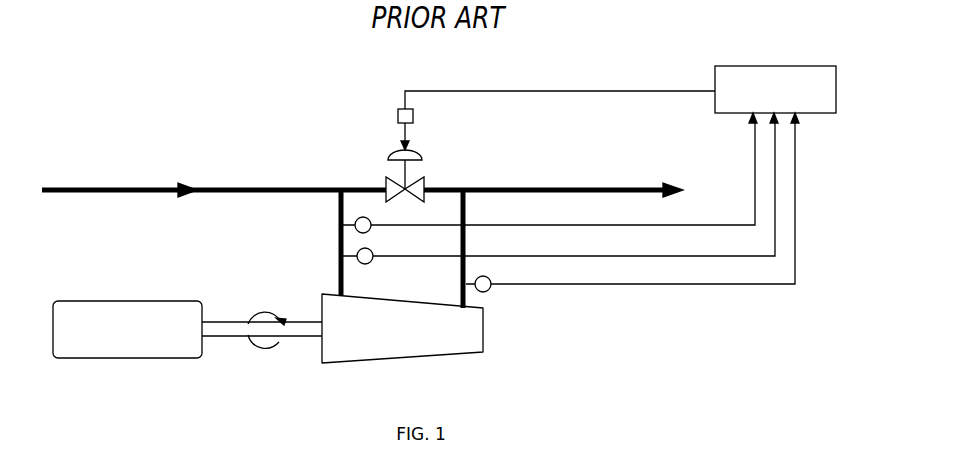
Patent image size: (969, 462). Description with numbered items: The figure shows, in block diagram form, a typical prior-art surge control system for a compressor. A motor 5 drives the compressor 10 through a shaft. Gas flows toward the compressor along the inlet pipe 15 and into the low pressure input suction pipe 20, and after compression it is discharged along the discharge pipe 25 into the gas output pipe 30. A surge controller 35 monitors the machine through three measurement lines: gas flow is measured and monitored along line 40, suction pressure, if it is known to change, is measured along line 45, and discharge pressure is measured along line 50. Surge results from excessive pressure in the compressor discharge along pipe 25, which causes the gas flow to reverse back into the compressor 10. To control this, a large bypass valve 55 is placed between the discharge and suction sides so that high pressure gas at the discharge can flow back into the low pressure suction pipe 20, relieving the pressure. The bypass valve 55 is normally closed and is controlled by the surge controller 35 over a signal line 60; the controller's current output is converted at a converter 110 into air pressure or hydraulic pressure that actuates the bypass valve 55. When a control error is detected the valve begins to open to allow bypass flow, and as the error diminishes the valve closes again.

The motor 5 is at (122, 301).
The compressor 10 is at (483, 333).
The pipe 15 is at (238, 188).
The low pressure input suction pipe 20 is at (338, 235).
The discharge pipe 25 is at (466, 208).
The gas output pipe 30 is at (608, 187).
The surge controller 35 is at (715, 66).
The line 40 is at (590, 223).
The line 45 is at (590, 254).
The line 50 is at (595, 282).
The bypass valve 55 is at (424, 182).
The signal line 60 is at (592, 91).
The converter 110 is at (398, 110).